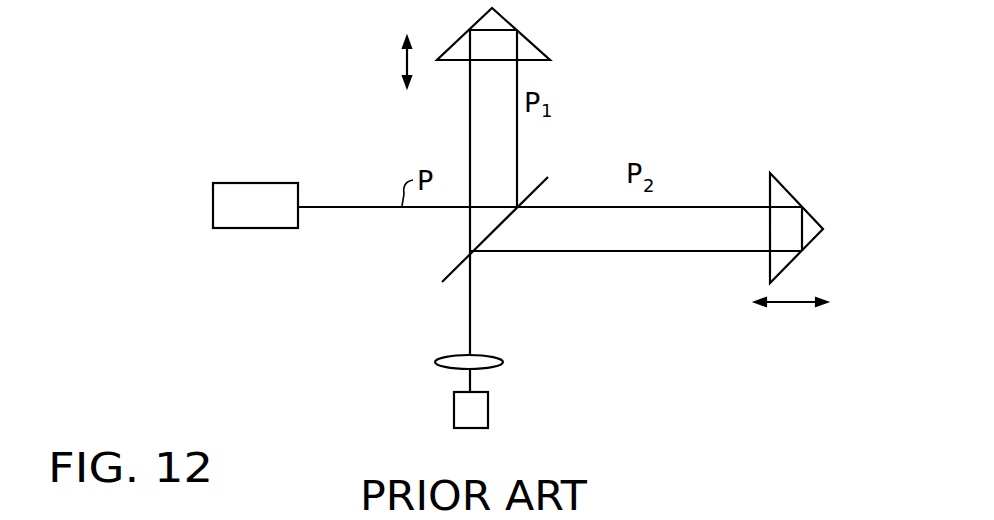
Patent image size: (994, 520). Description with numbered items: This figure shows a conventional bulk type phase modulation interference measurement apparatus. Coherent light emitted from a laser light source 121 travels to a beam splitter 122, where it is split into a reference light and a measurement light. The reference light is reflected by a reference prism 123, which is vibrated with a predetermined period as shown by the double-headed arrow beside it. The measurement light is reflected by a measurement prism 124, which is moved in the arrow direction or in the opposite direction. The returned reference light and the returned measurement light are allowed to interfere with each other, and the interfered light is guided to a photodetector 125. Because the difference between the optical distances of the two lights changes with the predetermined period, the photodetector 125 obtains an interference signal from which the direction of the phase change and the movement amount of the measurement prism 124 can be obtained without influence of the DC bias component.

The laser light source 121 is at (252, 178).
The beam splitter 122 is at (545, 178).
The reference prism 123 is at (552, 24).
The measurement prism 124 is at (837, 173).
The photodetector 125 is at (490, 408).